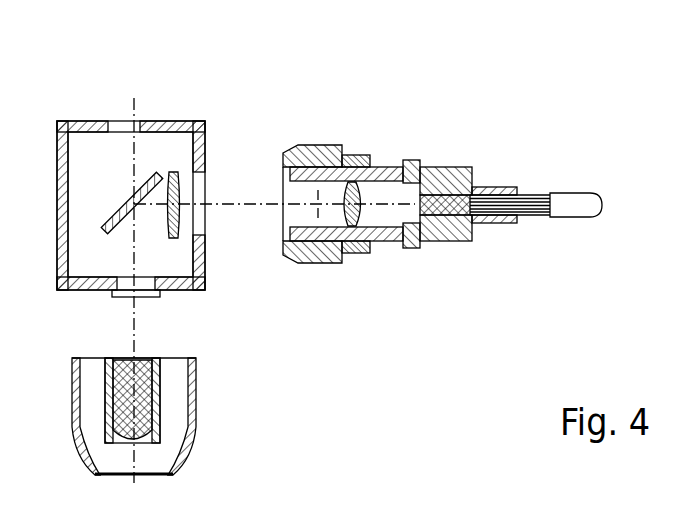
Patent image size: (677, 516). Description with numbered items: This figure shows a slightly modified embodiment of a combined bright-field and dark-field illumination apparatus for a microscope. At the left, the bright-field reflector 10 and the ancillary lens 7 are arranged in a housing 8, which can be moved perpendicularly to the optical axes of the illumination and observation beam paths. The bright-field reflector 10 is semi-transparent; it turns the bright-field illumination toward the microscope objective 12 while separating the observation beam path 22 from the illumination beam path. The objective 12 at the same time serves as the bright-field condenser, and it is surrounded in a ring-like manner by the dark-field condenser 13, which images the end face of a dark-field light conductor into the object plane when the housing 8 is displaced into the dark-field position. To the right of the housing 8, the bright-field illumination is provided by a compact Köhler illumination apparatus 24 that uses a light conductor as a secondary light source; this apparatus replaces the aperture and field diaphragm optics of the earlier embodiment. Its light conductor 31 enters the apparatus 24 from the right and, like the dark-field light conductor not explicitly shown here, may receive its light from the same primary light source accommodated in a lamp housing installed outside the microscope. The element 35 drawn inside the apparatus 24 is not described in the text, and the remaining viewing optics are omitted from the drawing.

The observation beam path 22 is at (133, 98).
The bright-field reflector 10 is at (151, 170).
The ancillary lens 7 is at (179, 183).
The housing 8 is at (193, 290).
The microscope objective 12 is at (148, 398).
The dark-field condenser 13 is at (193, 433).
The compact Köhler illumination apparatus 24 is at (364, 150).
The coupling lens 35 is at (413, 192).
The light conductor 31 is at (565, 193).